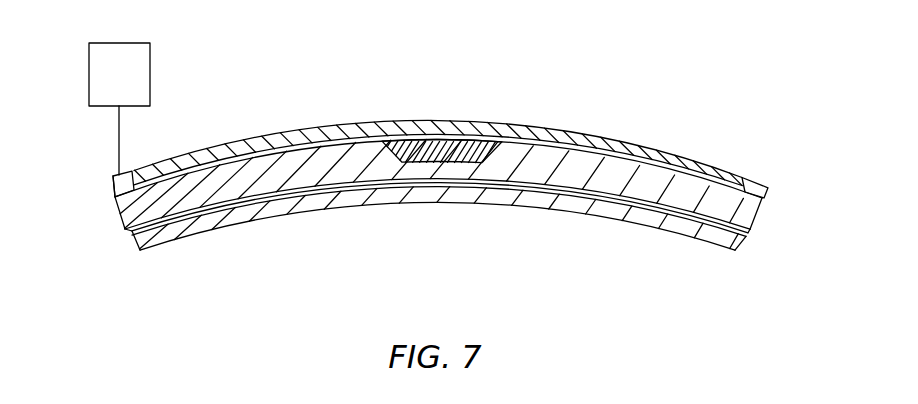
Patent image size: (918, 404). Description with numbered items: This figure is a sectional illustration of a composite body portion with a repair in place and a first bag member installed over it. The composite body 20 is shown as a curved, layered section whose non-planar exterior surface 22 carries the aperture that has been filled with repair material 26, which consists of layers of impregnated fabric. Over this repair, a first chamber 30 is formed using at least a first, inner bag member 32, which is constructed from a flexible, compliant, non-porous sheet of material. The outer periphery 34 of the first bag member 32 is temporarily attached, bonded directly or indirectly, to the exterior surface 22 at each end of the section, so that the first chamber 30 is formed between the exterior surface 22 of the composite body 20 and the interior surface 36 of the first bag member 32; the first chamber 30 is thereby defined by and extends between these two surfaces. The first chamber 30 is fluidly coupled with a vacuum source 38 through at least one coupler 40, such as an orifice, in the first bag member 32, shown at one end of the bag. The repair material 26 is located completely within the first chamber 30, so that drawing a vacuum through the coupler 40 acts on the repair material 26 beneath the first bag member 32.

The composite body 20 is at (740, 245).
The exterior surface 22 is at (688, 162).
The repair material 26 is at (446, 155).
The first chamber 30 is at (263, 158).
The first bag member 32 is at (330, 126).
The outer periphery 34 is at (113, 189).
The interior surface 36 is at (613, 160).
The vacuum source 38 is at (106, 87).
The coupler 40 is at (113, 177).